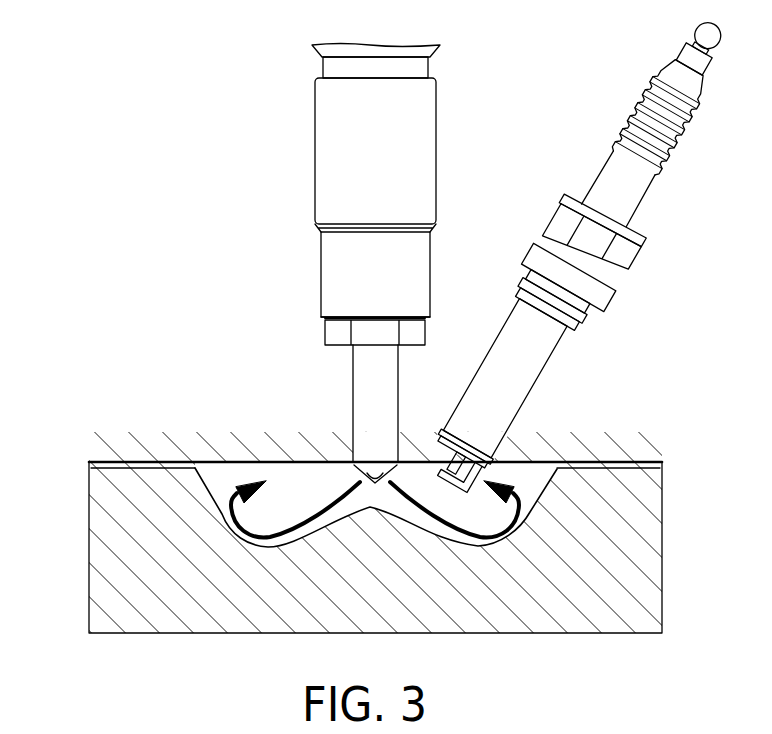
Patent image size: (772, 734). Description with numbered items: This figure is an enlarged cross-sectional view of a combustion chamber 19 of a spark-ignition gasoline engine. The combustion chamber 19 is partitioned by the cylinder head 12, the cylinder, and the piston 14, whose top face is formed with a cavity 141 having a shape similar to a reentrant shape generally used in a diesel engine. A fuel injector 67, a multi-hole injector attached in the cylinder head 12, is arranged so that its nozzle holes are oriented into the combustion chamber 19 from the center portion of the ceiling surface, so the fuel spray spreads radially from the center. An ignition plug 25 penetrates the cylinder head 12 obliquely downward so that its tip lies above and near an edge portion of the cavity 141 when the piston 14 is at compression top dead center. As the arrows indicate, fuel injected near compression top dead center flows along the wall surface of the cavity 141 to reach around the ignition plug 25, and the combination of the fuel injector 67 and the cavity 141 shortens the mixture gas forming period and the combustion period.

The cylinder head 12 is at (130, 467).
The piston 14 is at (647, 558).
The combustion chamber 19 is at (300, 480).
The ignition plug 25 is at (545, 377).
The fuel injector 67 is at (313, 136).
The cavity 141 is at (220, 480).